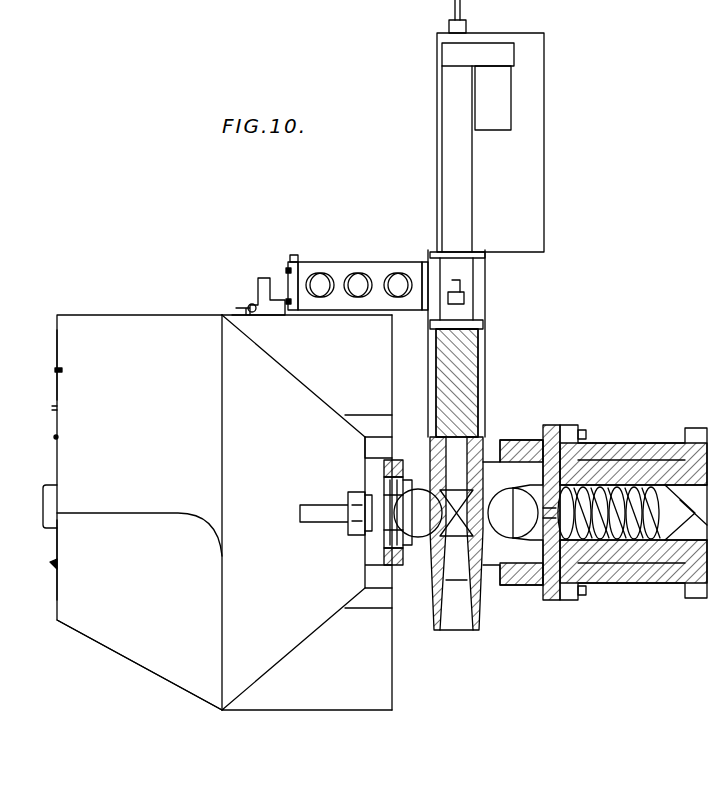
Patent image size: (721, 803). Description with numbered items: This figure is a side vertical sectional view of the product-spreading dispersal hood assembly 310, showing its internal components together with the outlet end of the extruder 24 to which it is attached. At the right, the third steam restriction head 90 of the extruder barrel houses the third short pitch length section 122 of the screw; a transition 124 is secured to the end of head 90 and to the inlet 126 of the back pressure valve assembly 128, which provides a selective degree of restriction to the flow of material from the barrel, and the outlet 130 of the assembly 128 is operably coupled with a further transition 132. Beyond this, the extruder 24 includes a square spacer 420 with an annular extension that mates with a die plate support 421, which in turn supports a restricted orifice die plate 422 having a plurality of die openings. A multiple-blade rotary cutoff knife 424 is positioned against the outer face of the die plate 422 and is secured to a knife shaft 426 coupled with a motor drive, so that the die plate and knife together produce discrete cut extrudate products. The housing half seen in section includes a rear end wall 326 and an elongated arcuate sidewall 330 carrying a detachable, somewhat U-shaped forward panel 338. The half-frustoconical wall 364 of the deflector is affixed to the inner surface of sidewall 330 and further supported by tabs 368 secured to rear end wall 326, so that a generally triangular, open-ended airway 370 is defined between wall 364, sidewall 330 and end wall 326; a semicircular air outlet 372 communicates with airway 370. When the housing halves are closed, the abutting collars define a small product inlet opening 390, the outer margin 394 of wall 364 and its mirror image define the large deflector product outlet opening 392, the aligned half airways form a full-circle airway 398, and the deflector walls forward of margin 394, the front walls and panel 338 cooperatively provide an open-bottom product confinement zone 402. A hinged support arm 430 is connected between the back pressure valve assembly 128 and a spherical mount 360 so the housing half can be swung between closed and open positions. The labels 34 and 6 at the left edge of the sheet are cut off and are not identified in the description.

The product-spreading dispersal hood assembly 310 is at (137, 278).
The elongated arcuate sidewall 330 is at (88, 315).
The side wall 34 is at (55, 350).
The wall 6 is at (29, 559).
The deflector product outlet opening 392 is at (216, 578).
The forward panel 338 is at (100, 631).
The product confinement zone 402 is at (178, 632).
The outer margin 394 is at (222, 413).
The half-frustoconical wall 364 is at (245, 378).
The airway 370 is at (318, 695).
The rear end wall 326 is at (392, 700).
The full-circle airway 398 is at (307, 334).
The tabs 368 is at (375, 418).
The product inlet opening 390 is at (355, 580).
The semicircular air outlet 372 is at (365, 445).
The die plate support 421 is at (384, 465).
The restricted orifice die plate 422 is at (384, 485).
The knife shaft 426 is at (300, 513).
The multiple-blade rotary cutoff knife 424 is at (356, 530).
The square spacer 420 is at (405, 625).
The back pressure valve assembly 128 is at (504, 320).
The transition 132 is at (428, 472).
The outlet 130 is at (452, 628).
The extruder 24 is at (622, 416).
The inlet 126 is at (497, 452).
The transition 124 is at (530, 587).
The third steam restriction head 90 is at (650, 445).
The third short pitch length section 122 is at (622, 545).
The hinged support arm 430 is at (342, 262).
The spherical mount 360 is at (245, 300).